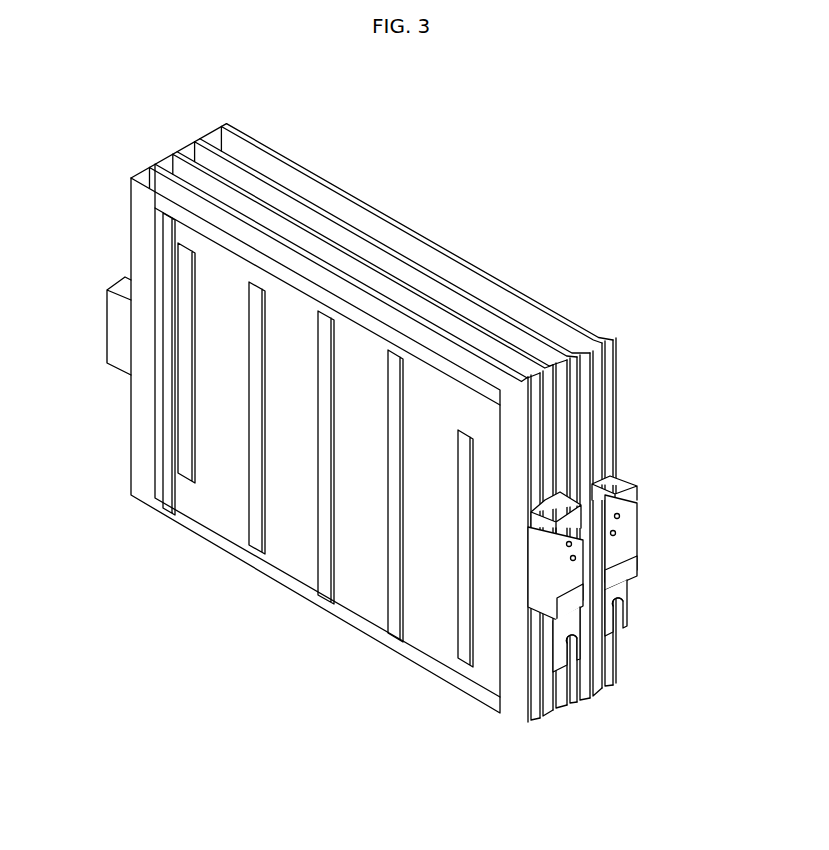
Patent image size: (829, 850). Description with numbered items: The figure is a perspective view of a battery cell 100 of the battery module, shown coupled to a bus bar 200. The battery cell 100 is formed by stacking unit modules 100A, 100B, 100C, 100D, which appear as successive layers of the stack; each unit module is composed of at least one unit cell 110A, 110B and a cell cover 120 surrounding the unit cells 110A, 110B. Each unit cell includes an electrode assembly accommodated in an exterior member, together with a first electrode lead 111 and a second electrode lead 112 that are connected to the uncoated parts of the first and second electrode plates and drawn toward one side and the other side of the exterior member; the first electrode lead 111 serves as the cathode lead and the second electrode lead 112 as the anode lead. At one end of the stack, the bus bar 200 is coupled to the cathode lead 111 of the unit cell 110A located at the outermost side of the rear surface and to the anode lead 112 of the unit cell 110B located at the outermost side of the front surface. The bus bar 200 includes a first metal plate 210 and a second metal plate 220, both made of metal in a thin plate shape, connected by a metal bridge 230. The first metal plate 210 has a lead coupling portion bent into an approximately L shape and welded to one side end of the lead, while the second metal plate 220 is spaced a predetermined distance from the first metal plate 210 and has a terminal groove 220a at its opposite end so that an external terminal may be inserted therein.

The battery cell 100 is at (386, 208).
The unit module 100A is at (208, 122).
The unit module 100B is at (182, 143).
The unit module 100C is at (156, 157).
The unit module 100D is at (128, 176).
The unit cell 110A is at (530, 397).
The unit cell 110B is at (513, 407).
The first electrode lead 111 is at (117, 323).
The second electrode lead 112 is at (130, 272).
The cell cover 120 is at (398, 318).
The bus bar 200 is at (389, 483).
The first metal plate 210 is at (630, 533).
The second metal plate 220 is at (633, 593).
The terminal groove 220a is at (568, 652).
The metal bridge 230 is at (632, 578).